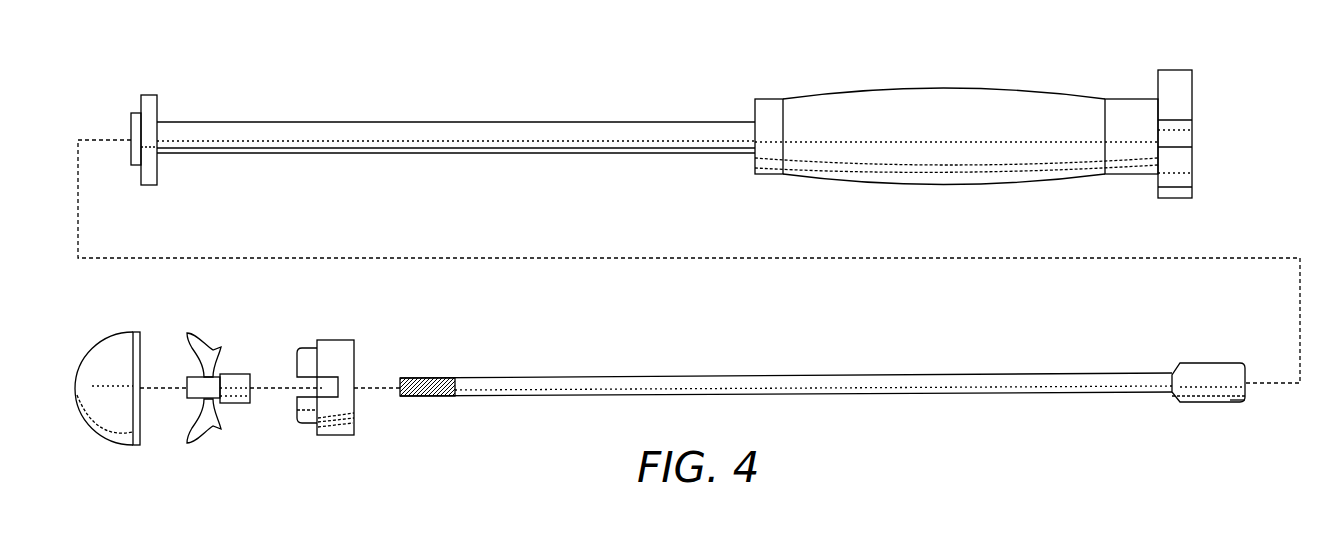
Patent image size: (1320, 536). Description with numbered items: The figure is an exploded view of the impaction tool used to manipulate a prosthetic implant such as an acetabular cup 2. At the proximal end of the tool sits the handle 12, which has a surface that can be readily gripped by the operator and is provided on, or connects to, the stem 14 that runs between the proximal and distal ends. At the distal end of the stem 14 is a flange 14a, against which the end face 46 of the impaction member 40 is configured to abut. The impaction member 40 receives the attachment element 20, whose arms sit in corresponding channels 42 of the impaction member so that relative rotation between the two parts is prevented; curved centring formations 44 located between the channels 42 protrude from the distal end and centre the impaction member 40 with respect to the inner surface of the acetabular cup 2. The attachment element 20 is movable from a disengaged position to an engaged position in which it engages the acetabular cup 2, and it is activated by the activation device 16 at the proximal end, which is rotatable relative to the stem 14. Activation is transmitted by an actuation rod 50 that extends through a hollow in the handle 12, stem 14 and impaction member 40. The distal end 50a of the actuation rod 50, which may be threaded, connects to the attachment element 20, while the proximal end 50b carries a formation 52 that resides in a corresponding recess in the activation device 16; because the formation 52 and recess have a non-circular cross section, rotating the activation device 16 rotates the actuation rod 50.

The acetabular cup 2 is at (106, 352).
The handle 12 is at (943, 88).
The stem 14 is at (453, 122).
The flange 14a is at (148, 95).
The activation device 16 is at (1171, 70).
The attachment element 20 is at (206, 333).
The impaction member 40 is at (334, 345).
The channels 42 is at (322, 387).
The centring formations 44 is at (306, 420).
The end face 46 is at (355, 416).
The actuation rod 50 is at (843, 375).
The distal end of the actuation rod 50a is at (427, 378).
The proximal end of the actuation rod 50b is at (1248, 392).
The formation 52 is at (1211, 363).